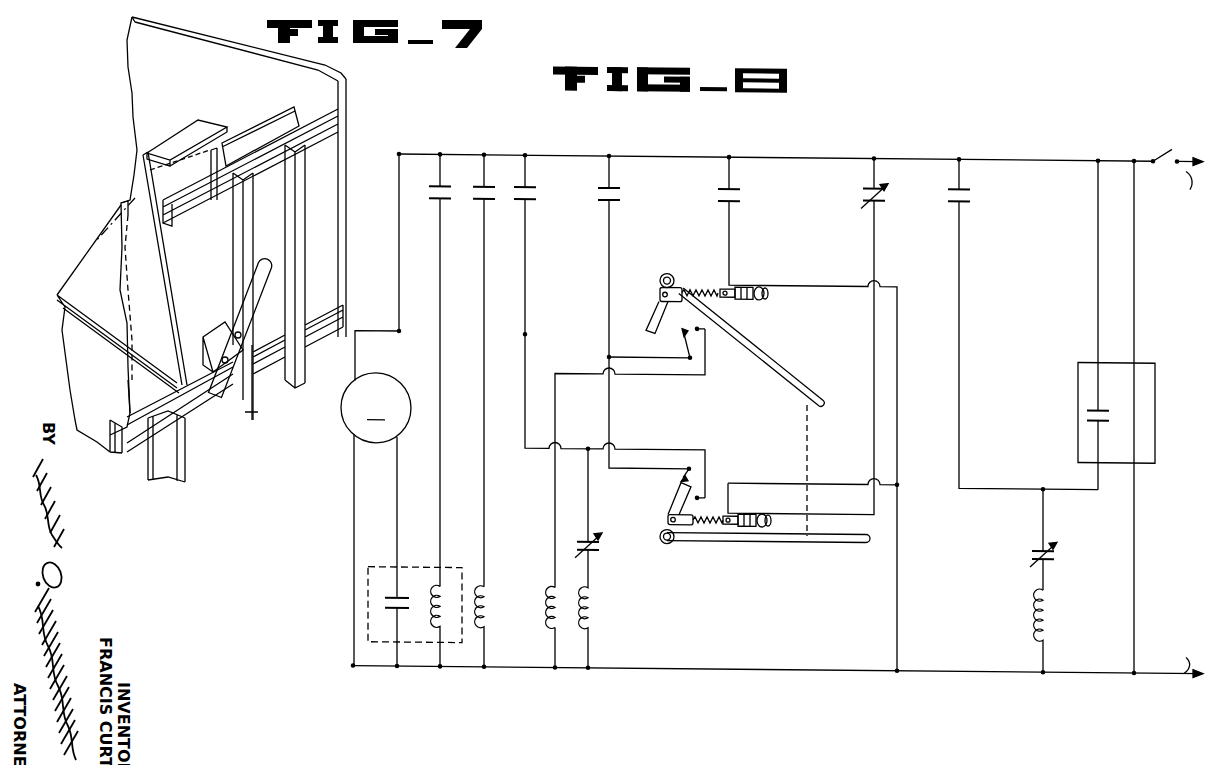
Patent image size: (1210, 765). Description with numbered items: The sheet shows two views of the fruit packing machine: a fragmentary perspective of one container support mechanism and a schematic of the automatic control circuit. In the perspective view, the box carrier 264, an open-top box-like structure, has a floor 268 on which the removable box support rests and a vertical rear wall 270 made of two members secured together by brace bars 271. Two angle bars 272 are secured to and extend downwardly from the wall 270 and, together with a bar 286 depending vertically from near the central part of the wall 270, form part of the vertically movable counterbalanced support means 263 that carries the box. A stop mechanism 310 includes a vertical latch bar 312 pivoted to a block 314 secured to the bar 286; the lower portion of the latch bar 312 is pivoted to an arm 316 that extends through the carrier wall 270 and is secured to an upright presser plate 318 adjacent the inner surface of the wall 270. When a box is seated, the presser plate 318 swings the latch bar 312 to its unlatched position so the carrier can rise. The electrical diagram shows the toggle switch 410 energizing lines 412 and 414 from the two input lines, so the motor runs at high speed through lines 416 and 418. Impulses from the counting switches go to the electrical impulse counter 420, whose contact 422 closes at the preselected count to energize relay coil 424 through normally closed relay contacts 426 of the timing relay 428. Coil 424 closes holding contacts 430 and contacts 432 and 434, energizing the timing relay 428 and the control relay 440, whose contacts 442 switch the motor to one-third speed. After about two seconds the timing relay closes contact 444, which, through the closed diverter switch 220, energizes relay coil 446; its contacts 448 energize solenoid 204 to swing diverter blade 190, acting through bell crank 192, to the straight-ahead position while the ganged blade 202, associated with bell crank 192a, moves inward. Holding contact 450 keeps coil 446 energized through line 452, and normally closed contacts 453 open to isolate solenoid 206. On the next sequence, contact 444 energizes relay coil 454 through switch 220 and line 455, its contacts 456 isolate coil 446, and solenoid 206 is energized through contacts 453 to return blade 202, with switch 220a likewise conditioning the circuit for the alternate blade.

In FIG. 7, the box carrier 264 is at (132, 57).
In FIG. 7, the floor 268 is at (98, 278).
In FIG. 7, the vertical rear wall 270 is at (112, 212).
In FIG. 7, the brace bars 271 is at (330, 128).
In FIG. 7, the angle bars 272 is at (293, 250).
In FIG. 7, the counterbalanced support means 263 is at (177, 458).
In FIG. 7, the bar 286 is at (256, 411).
In FIG. 7, the stop mechanism 310 is at (184, 130).
In FIG. 7, the latch bar 312 is at (256, 279).
In FIG. 7, the block 314 is at (282, 322).
In FIG. 7, the arm 316 is at (202, 348).
In FIG. 7, the presser plate 318 is at (210, 128).
In FIG. 8, the diverter blade 190 is at (777, 366).
In FIG. 8, the bell crank 192 is at (688, 246).
In FIG. 8, the bell crank 192a is at (670, 543).
In FIG. 8, the diverter blade 202 is at (826, 540).
In FIG. 8, the solenoid 204 is at (757, 297).
In FIG. 8, the solenoid 206 is at (746, 512).
In FIG. 8, the single pole electrical switch 220 is at (681, 330).
In FIG. 8, the single pole electrical switch 220a is at (682, 477).
In FIG. 8, the toggle switch 410 is at (1176, 124).
In FIG. 8, the line 412 is at (798, 154).
In FIG. 8, the line 414 is at (836, 676).
In FIG. 8, the line 416 is at (399, 280).
In FIG. 8, the line 418 is at (354, 528).
In FIG. 8, the electrical impulse counter 420 is at (1086, 356).
In FIG. 8, the contact 422 is at (1092, 403).
In FIG. 8, the relay coil 424 is at (1034, 612).
In FIG. 8, the normally closed relay contacts 426 is at (1037, 545).
In FIG. 8, the timing relay 428 is at (490, 598).
In FIG. 8, the holding contacts 430 is at (961, 198).
In FIG. 8, the contacts 432 is at (486, 199).
In FIG. 8, the contacts 434 is at (442, 199).
In FIG. 8, the control relay 440 is at (446, 598).
In FIG. 8, the contacts 442 is at (409, 590).
In FIG. 8, the contact 444 is at (611, 199).
In FIG. 8, the relay coil 446 is at (598, 612).
In FIG. 8, the contacts 448 is at (731, 199).
In FIG. 8, the holding contact 450 is at (527, 199).
In FIG. 8, the line 452 is at (526, 331).
In FIG. 8, the normally closed contacts 453 is at (876, 199).
In FIG. 8, the relay coil 454 is at (552, 612).
In FIG. 8, the line 455 is at (555, 478).
In FIG. 8, the contacts 456 is at (595, 550).